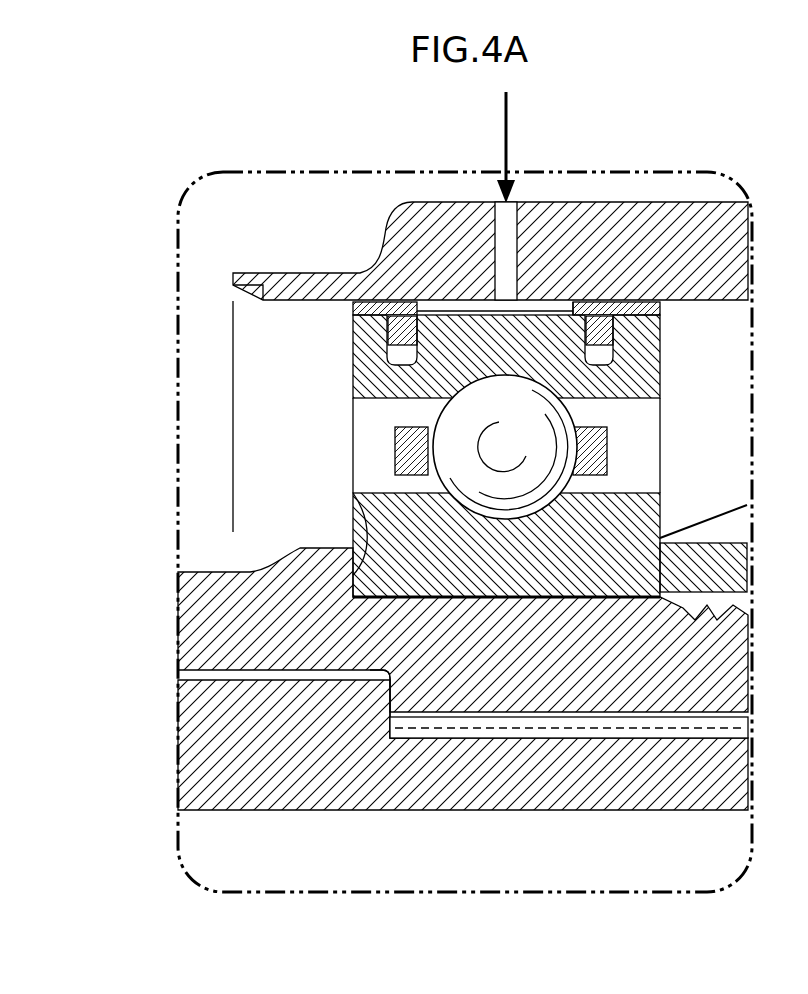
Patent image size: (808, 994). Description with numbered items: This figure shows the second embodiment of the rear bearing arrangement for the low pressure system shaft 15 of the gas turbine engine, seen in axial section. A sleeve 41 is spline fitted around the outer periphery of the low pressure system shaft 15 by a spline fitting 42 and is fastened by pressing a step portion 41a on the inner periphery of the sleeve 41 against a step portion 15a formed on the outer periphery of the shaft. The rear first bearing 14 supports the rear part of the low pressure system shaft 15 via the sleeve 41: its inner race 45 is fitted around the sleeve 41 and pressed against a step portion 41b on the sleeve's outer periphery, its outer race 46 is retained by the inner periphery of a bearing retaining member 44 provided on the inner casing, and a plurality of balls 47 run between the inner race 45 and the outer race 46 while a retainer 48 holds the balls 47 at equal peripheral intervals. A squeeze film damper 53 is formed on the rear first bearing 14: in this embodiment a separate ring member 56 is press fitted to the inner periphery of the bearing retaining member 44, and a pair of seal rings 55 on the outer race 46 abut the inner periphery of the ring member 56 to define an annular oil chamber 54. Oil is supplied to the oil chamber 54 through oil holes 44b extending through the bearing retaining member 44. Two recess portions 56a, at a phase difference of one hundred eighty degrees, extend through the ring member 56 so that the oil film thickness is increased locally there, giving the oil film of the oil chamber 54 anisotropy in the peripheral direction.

The rear first bearing 14 is at (555, 347).
The low pressure system shaft 15 is at (463, 815).
The step portion 15a is at (396, 700).
The sleeve 41 is at (463, 654).
The step portion 41a is at (387, 682).
The step portion 41b is at (355, 495).
The spline fitting 42 is at (578, 722).
The bearing retaining member 44 is at (658, 197).
The oil hole 44b is at (504, 253).
The inner race 45 is at (628, 525).
The outer race 46 is at (648, 382).
The balls 47 is at (512, 459).
The retainer 48 is at (406, 447).
The squeeze film damper 53 is at (426, 306).
The oil chamber 54 is at (443, 318).
The seal rings 55 is at (402, 325).
The ring member 56 is at (588, 296).
The recess portions 56a is at (577, 306).